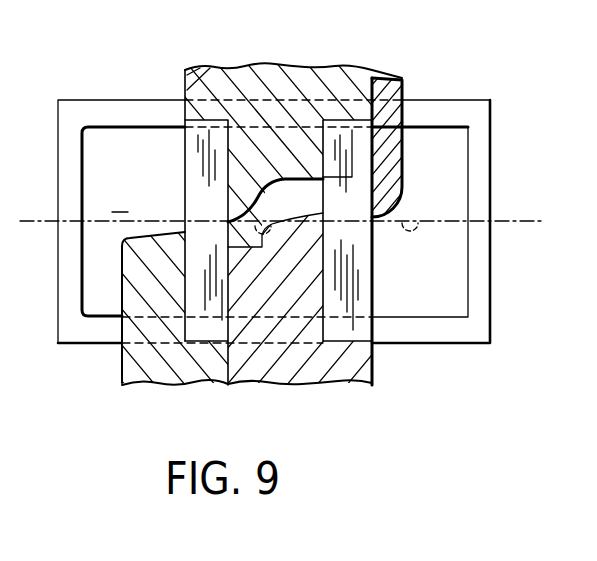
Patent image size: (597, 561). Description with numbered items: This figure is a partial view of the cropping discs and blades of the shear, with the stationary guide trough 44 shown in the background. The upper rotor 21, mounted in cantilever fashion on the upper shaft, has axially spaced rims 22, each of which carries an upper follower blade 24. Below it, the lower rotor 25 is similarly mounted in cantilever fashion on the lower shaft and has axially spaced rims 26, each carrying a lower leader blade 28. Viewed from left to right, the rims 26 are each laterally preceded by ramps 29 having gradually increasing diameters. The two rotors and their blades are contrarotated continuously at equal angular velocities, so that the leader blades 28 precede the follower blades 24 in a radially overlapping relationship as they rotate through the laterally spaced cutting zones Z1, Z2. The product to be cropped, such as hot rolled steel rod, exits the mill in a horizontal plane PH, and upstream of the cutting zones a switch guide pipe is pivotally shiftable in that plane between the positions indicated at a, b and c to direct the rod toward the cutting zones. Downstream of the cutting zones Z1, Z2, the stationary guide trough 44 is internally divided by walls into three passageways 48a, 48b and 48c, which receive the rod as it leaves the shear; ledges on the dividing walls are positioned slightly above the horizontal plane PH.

The upper rotor 21 is at (277, 70).
The rims 22 is at (196, 72).
The upper follower blade 24 is at (200, 150).
The lower rotor 25 is at (270, 375).
The rims 26 is at (188, 372).
The lower leader blade 28 is at (185, 268).
The ramps 29 is at (268, 250).
The stationary guide trough 44 is at (458, 100).
The passageway 48a is at (88, 163).
The passageway 48b is at (303, 177).
The passageway 48c is at (452, 250).
The guide pipe position a is at (120, 212).
The guide pipe position b is at (270, 212).
The guide pipe position c is at (406, 230).
The cutting zone Z1 is at (203, 217).
The cutting zone Z2 is at (370, 197).
The horizontal plane PH is at (510, 220).